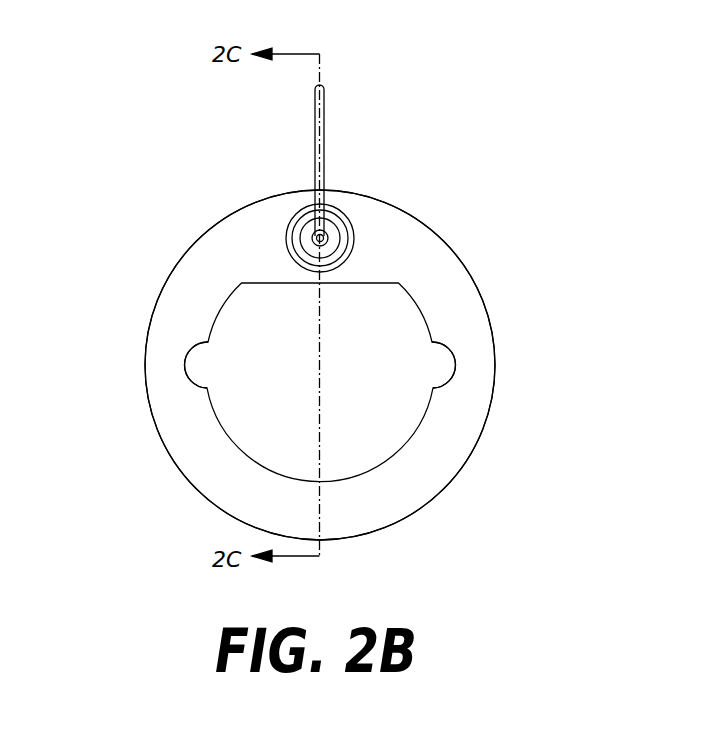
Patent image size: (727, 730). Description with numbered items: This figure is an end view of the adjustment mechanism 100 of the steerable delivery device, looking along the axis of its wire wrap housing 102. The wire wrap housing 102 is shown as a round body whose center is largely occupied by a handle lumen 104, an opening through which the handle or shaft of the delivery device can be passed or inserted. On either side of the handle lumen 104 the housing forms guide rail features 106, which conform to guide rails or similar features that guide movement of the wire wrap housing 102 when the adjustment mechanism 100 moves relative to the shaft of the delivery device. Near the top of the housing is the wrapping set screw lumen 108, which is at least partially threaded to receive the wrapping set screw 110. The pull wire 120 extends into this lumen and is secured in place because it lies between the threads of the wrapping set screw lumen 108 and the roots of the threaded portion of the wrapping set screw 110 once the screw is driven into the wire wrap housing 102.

The adjustment mechanism 100 is at (402, 351).
The wire wrap housing 102 is at (351, 365).
The handle lumen 104 is at (267, 382).
The guide rail features 106 is at (248, 372).
The wrapping set screw lumen 108 is at (273, 210).
The wrapping set screw 110 is at (370, 203).
The pull wire 120 is at (377, 160).